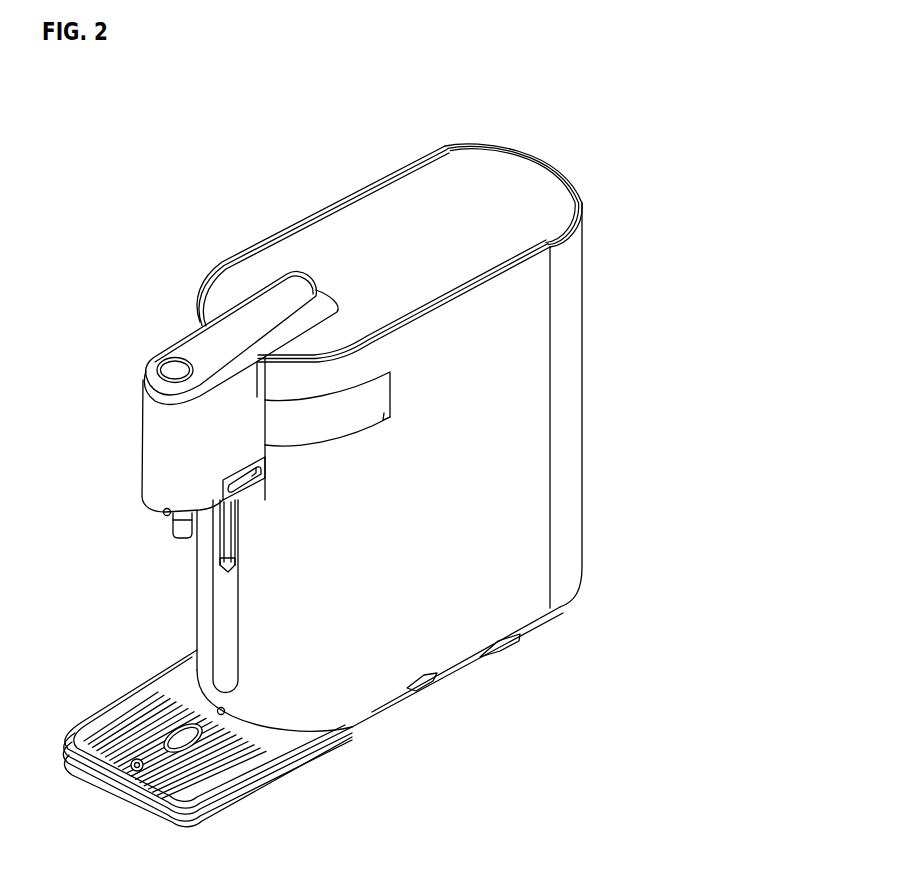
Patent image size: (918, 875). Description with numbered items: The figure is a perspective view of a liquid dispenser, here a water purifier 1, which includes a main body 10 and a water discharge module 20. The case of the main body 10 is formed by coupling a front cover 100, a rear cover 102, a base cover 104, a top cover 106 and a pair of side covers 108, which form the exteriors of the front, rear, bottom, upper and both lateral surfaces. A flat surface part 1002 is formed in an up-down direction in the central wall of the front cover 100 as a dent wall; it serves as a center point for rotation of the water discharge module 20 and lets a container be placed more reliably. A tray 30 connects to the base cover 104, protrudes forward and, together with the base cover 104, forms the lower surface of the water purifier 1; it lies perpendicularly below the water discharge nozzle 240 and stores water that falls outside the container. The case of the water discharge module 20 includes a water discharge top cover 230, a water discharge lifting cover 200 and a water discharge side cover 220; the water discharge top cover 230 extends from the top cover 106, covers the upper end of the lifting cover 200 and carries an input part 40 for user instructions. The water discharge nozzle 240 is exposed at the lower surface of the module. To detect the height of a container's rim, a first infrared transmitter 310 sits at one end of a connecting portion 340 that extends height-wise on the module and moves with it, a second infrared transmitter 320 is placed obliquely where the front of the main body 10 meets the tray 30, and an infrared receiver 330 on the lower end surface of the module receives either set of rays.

The water purifier 1 is at (131, 137).
The main body 10 is at (580, 150).
The water discharge module 20 is at (125, 419).
The tray 30 is at (98, 718).
The input part 40 is at (168, 370).
The front cover 100 is at (317, 702).
The rear cover 102 is at (570, 346).
The base cover 104 is at (447, 673).
The top cover 106 is at (405, 187).
The side cover 108 is at (488, 608).
The water discharge lifting cover 200 is at (150, 445).
The water discharge side cover 220 is at (380, 400).
The water discharge top cover 230 is at (263, 297).
The water discharge nozzle 240 is at (172, 529).
The first infrared transmitter 310 is at (222, 560).
The second infrared transmitter 320 is at (225, 710).
The infrared receiver 330 is at (162, 511).
The connecting portion 340 is at (235, 523).
The flat surface part 1002 is at (225, 586).